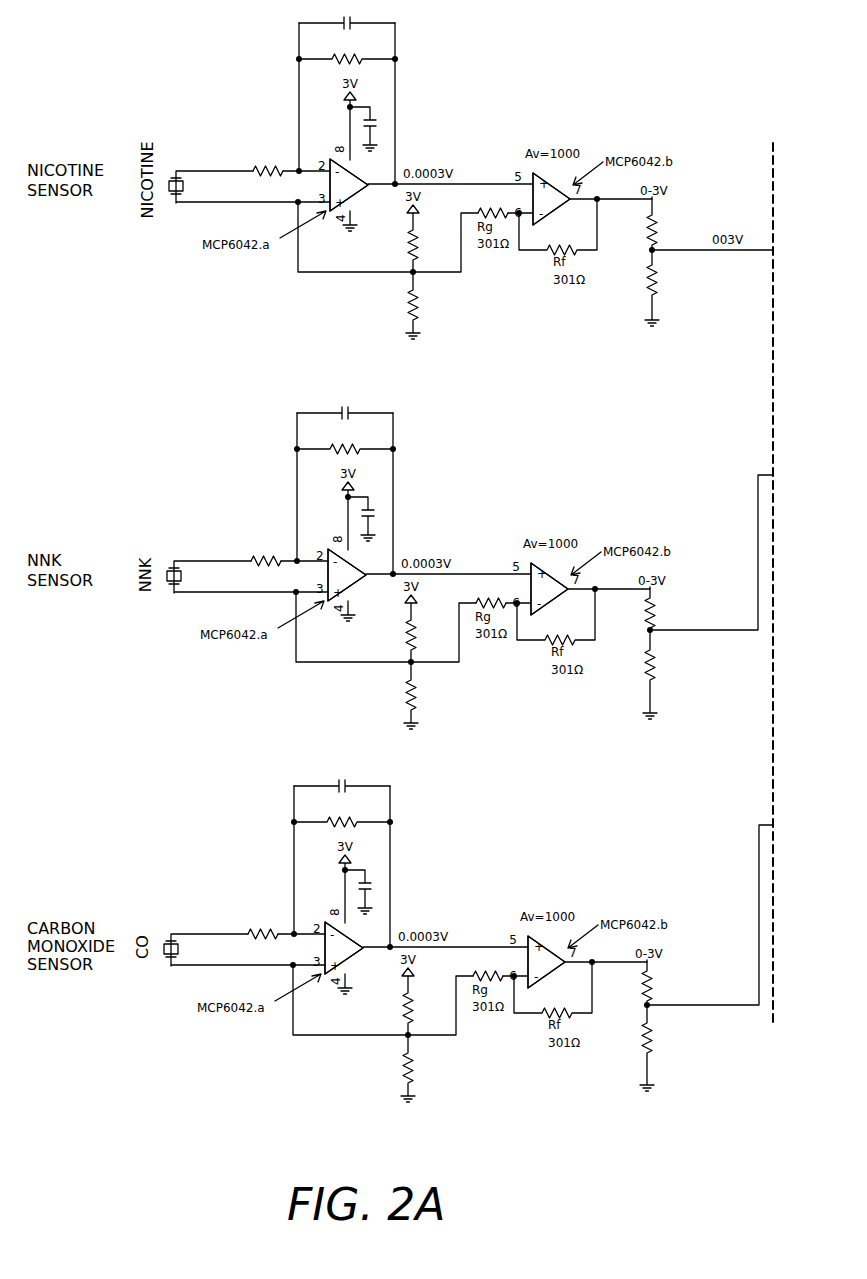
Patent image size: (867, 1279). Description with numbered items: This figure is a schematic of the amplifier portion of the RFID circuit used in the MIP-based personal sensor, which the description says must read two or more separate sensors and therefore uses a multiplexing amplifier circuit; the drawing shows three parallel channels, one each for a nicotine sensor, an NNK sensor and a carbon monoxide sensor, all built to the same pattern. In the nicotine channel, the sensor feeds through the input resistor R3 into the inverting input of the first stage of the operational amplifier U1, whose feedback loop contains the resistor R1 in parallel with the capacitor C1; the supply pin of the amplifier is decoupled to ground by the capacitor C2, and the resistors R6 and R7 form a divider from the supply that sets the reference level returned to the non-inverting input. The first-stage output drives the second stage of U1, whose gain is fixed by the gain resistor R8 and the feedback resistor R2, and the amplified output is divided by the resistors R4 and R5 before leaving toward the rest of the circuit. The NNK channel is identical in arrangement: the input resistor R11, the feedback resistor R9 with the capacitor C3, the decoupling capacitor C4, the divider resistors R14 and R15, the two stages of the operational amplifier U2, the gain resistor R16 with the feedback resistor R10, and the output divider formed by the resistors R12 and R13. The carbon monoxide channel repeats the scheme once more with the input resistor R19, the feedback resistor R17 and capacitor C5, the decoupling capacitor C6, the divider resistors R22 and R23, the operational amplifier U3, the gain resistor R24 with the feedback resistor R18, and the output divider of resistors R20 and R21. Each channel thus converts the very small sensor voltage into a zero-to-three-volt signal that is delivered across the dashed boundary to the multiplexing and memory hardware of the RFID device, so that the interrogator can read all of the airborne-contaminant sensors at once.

The feedback capacitor 4.7uF (nicotine channel) C1 is at (347, 24).
The feedback resistor 100K (nicotine channel) R1 is at (347, 58).
The supply decoupling capacitor .01uF (nicotine channel) C2 is at (366, 129).
The input resistor 1K (nicotine channel) R3 is at (268, 174).
The operational amplifier MCP6042 (nicotine channel) U1 is at (450, 192).
The bias divider resistor 100K (nicotine channel) R6 is at (411, 242).
The bias divider resistor 100K (nicotine channel) R7 is at (411, 305).
The gain resistor Rg 301 ohm (nicotine channel) R8 is at (493, 206).
The feedback resistor Rf 301 ohm (nicotine channel) R2 is at (558, 227).
The output divider resistor 100K (nicotine channel) R4 is at (649, 223).
The output divider resistor 100K (nicotine channel) R5 is at (649, 288).
The feedback capacitor 4.7uF (NNK channel) C3 is at (345, 414).
The feedback resistor 100K (NNK channel) R9 is at (345, 448).
The supply decoupling capacitor .01uF (NNK channel) C4 is at (364, 519).
The input resistor 1K (NNK channel) R11 is at (266, 564).
The operational amplifier MCP6042 (NNK channel) U2 is at (448, 582).
The bias divider resistor 100K (NNK channel) R14 is at (409, 632).
The bias divider resistor 100K (NNK channel) R15 is at (409, 695).
The gain resistor Rg 301 ohm (NNK channel) R16 is at (491, 596).
The feedback resistor Rf 301 ohm (NNK channel) R10 is at (556, 617).
The output divider resistor 100K (NNK channel) R12 is at (647, 608).
The output divider resistor 100K (NNK channel) R13 is at (647, 674).
The feedback capacitor 4.7uF (CO channel) C5 is at (342, 787).
The feedback resistor 100K (CO channel) R17 is at (342, 821).
The supply decoupling capacitor .01uF (CO channel) C6 is at (361, 892).
The input resistor 1K (CO channel) R19 is at (263, 937).
The operational amplifier MCP6042 (CO channel) U3 is at (445, 955).
The bias divider resistor 100K (CO channel) R22 is at (406, 1005).
The bias divider resistor 100K (CO channel) R23 is at (406, 1068).
The gain resistor Rg 301 ohm (CO channel) R24 is at (488, 969).
The feedback resistor Rf 301 ohm (CO channel) R18 is at (553, 990).
The output divider resistor 100K (CO channel) R20 is at (644, 982).
The output divider resistor 100K (CO channel) R21 is at (644, 1048).